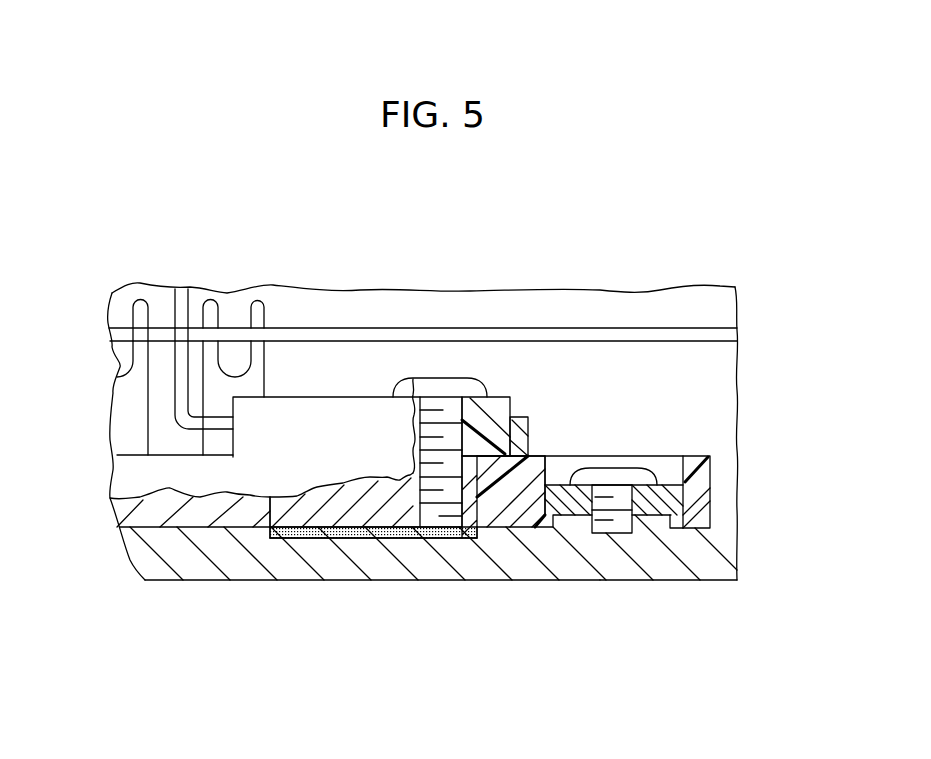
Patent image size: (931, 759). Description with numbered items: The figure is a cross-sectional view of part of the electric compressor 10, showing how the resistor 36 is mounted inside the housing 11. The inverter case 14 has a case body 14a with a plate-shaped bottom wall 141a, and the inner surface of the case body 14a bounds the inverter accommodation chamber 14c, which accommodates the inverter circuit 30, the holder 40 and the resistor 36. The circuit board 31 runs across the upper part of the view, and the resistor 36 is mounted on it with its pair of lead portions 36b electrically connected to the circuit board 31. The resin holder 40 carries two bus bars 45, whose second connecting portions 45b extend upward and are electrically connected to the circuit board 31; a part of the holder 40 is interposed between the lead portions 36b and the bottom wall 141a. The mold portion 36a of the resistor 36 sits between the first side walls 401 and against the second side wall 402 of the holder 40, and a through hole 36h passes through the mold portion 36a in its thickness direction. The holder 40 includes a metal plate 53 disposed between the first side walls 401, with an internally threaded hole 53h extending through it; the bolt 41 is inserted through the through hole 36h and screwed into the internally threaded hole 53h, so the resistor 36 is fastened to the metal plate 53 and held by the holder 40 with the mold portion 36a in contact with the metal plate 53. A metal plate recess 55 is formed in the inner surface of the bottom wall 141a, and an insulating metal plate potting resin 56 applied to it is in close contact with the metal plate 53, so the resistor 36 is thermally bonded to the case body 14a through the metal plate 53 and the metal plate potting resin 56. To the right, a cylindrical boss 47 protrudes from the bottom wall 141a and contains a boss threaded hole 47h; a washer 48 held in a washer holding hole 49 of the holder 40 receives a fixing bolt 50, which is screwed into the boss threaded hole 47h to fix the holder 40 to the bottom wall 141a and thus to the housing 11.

The electric compressor 10 is at (773, 226).
The housing 11 is at (142, 571).
The inverter case 14 is at (142, 552).
The case body 14a is at (740, 543).
The bottom wall 141a is at (738, 577).
The inverter accommodation chamber 14c is at (698, 381).
The inverter circuit 30 is at (714, 415).
The circuit board 31 is at (634, 328).
The resistor 36 is at (498, 396).
The mold portion 36a is at (512, 437).
The lead portions 36b is at (172, 299).
The through hole 36h is at (460, 374).
The holder 40 is at (705, 484).
The first side walls 401 is at (322, 401).
The second side wall 402 is at (512, 416).
The bolt 41 is at (425, 378).
The bus bars 45 is at (132, 321).
The second connecting portion 45b is at (136, 305).
The bosses 47 is at (677, 499).
The boss threaded hole 47h is at (617, 534).
The washers 48 is at (667, 483).
The washer holding holes 49 is at (545, 486).
The fixing bolts 50 is at (613, 467).
The metal plate 53 is at (352, 539).
The internally threaded hole 53h is at (400, 539).
The metal plate recess 55 is at (287, 539).
The metal plate potting resin 56 is at (308, 539).